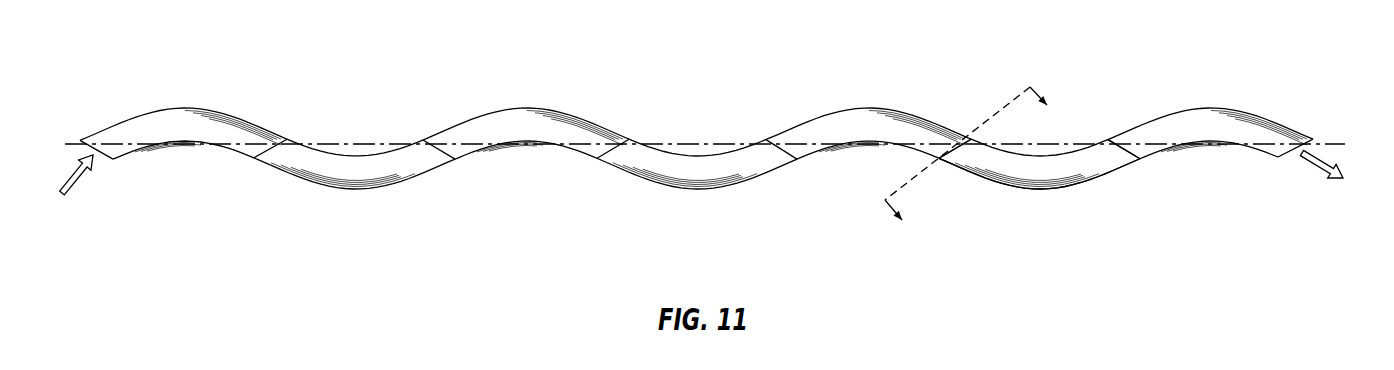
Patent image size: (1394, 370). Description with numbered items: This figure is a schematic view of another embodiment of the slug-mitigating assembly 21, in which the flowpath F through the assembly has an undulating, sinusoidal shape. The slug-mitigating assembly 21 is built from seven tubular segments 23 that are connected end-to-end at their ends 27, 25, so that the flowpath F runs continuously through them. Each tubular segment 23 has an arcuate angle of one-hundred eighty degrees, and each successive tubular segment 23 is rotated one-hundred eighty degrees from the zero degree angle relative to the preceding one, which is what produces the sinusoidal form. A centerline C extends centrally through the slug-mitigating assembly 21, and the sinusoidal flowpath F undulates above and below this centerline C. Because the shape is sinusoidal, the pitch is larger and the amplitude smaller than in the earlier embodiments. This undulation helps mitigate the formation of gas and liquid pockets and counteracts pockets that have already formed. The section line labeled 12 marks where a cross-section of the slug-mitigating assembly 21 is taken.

The slug-mitigating assembly 21 is at (697, 67).
The section line 12- 12 is at (979, 169).
The end of tubular segment 25 is at (1110, 133).
The end of tubular segment 27 is at (949, 152).
The tubular segment 23 is at (1087, 162).
The centerline C is at (1338, 145).
The flowpath F is at (705, 189).